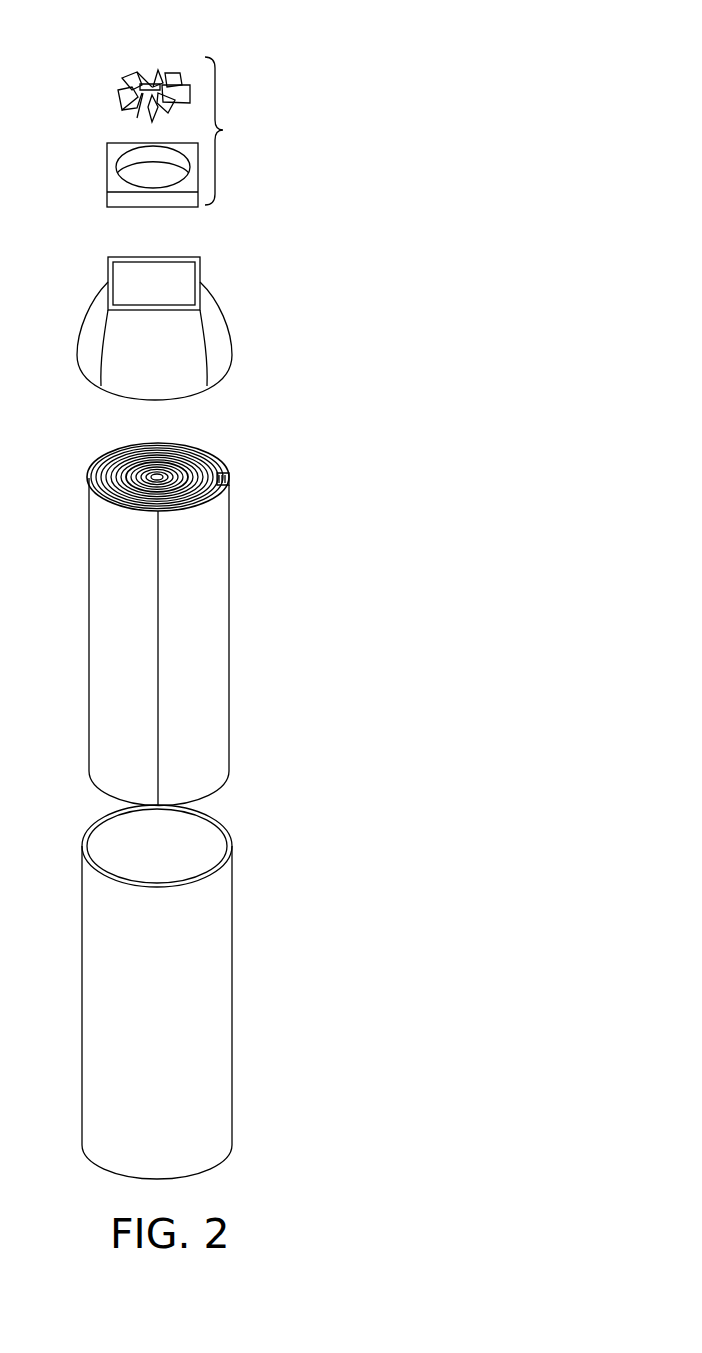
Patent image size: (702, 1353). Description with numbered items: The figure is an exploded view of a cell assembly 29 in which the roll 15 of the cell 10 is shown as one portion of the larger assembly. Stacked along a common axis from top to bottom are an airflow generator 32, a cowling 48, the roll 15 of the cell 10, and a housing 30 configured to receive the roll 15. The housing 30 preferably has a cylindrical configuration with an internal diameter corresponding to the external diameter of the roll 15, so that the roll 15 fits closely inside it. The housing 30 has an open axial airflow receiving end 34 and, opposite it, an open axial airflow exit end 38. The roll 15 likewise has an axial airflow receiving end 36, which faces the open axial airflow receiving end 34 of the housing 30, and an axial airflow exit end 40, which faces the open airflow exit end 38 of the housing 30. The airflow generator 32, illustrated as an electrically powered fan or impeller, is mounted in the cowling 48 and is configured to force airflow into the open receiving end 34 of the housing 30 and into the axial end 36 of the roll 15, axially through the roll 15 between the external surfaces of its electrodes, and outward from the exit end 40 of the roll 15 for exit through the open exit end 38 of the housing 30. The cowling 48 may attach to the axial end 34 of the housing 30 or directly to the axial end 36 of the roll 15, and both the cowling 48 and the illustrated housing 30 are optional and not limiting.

The cell assembly 29 is at (466, 70).
The airflow generator 32 is at (183, 132).
The cowling 48 is at (220, 358).
The cell 10 is at (281, 588).
The axial airflow receiving end of the roll 36 is at (229, 482).
The roll 15 is at (98, 614).
The axial airflow exit end of the roll 40 is at (225, 783).
The housing 30 is at (176, 1008).
The open axial airflow receiving end 34 is at (232, 852).
The open axial airflow exit end 38 is at (85, 1158).